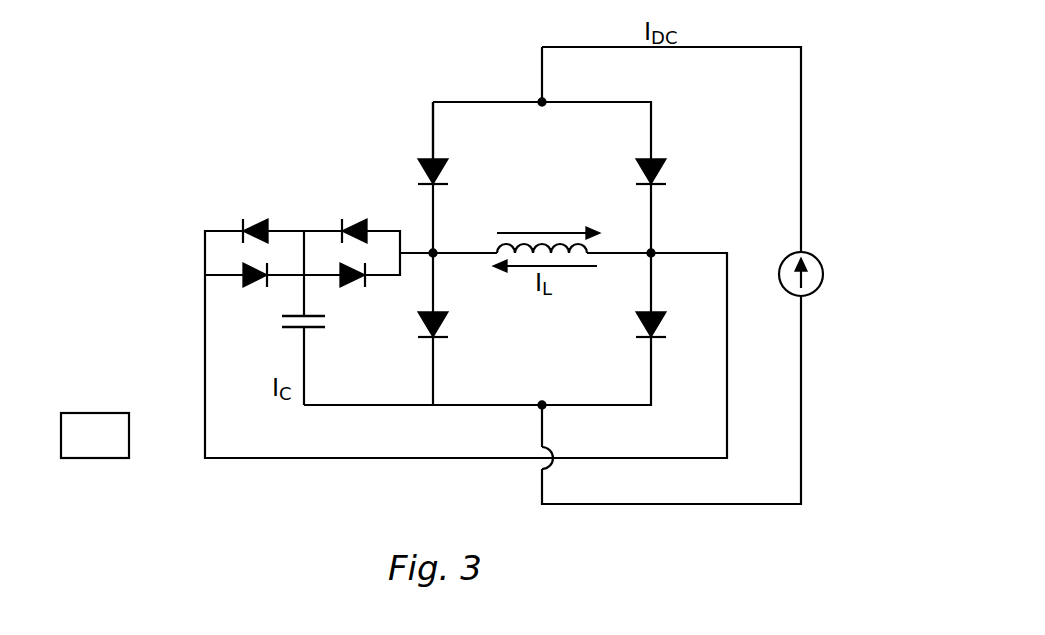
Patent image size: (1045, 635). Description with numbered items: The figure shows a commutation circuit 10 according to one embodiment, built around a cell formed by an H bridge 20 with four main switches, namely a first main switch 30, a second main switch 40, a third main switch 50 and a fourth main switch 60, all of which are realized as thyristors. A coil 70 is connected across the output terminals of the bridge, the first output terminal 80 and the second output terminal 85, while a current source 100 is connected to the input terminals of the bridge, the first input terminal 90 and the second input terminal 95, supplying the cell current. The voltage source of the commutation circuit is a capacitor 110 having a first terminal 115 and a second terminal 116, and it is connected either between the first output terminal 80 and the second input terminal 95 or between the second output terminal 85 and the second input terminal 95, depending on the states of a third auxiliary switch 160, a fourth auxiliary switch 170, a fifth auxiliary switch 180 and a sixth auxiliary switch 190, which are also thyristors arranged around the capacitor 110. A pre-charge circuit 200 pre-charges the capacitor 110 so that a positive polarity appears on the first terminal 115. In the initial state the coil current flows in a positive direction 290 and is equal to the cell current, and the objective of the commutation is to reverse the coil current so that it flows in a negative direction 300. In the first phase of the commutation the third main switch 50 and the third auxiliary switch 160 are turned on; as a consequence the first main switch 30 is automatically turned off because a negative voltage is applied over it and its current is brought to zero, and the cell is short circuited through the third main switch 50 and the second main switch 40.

The commutation circuit 10 is at (283, 86).
The H bridge 20 is at (433, 118).
The first main switch 30 is at (448, 172).
The second main switch 40 is at (640, 320).
The third main switch 50 is at (640, 165).
The fourth main switch 60 is at (448, 325).
The coil 70 is at (540, 243).
The first output terminal 80 is at (436, 257).
The second output terminal 85 is at (649, 257).
The first input terminal 90 is at (542, 102).
The second input terminal 95 is at (540, 408).
The current source 100 is at (823, 270).
The capacitor 110 is at (305, 347).
The first terminal 115 is at (285, 311).
The second capacitor plate 116 is at (290, 330).
The third auxiliary switch 160 is at (346, 288).
The fourth auxiliary switch 170 is at (367, 211).
The fifth auxiliary switch 180 is at (267, 211).
The sixth auxiliary switch 190 is at (247, 289).
The pre-charge circuit 200 is at (97, 413).
The positive direction 290 is at (565, 232).
The negative direction 300 is at (565, 268).